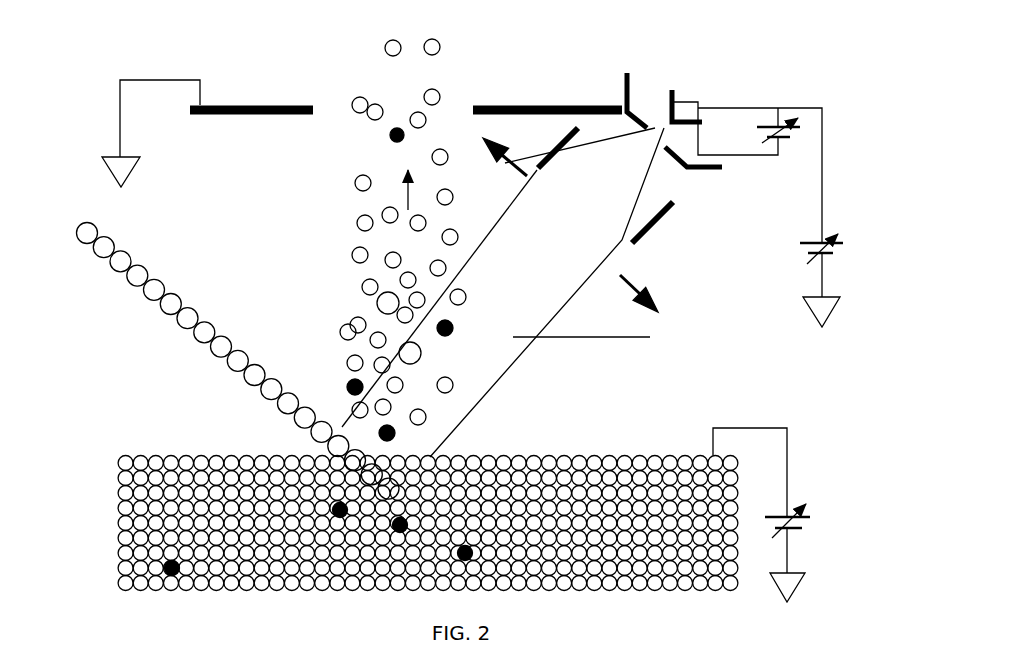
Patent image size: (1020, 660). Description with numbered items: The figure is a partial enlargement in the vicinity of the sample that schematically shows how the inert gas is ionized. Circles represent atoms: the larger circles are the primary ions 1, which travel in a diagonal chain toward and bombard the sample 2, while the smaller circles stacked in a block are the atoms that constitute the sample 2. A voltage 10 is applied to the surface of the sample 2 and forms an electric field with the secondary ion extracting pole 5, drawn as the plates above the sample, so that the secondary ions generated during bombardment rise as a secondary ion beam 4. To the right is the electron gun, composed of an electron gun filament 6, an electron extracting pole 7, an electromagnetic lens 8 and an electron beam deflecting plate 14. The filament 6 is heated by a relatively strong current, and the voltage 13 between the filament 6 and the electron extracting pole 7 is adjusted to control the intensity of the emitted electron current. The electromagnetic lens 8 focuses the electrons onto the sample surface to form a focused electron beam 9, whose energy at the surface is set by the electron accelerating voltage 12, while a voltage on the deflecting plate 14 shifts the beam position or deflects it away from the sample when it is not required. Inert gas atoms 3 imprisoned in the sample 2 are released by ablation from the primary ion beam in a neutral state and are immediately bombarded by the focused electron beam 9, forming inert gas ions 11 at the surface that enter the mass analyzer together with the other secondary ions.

The primary ions 1 is at (173, 315).
The sample 2 is at (127, 547).
The inert gas atoms 3 is at (166, 567).
The secondary ion beam 4 is at (385, 276).
The secondary ion extracting pole 5 is at (406, 63).
The electron gun filament 6 is at (675, 100).
The electron extracting pole 7 is at (630, 72).
The electromagnetic lens 8 is at (527, 176).
The focused electron beam 9 is at (598, 335).
The voltage 10 is at (805, 503).
The inert gas ions 11 is at (392, 432).
The electron accelerating voltage 12 is at (803, 240).
The voltage between the electron gun filament and the electron extracting pole 13 is at (807, 122).
The electron beam deflecting plate 14 is at (560, 148).